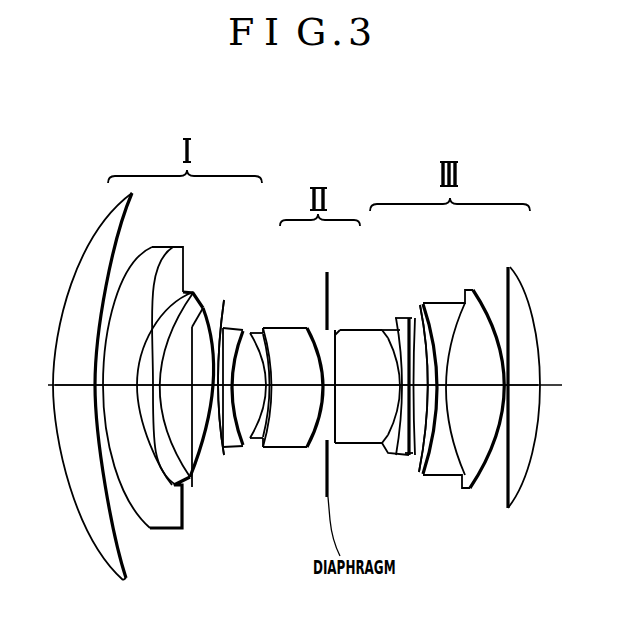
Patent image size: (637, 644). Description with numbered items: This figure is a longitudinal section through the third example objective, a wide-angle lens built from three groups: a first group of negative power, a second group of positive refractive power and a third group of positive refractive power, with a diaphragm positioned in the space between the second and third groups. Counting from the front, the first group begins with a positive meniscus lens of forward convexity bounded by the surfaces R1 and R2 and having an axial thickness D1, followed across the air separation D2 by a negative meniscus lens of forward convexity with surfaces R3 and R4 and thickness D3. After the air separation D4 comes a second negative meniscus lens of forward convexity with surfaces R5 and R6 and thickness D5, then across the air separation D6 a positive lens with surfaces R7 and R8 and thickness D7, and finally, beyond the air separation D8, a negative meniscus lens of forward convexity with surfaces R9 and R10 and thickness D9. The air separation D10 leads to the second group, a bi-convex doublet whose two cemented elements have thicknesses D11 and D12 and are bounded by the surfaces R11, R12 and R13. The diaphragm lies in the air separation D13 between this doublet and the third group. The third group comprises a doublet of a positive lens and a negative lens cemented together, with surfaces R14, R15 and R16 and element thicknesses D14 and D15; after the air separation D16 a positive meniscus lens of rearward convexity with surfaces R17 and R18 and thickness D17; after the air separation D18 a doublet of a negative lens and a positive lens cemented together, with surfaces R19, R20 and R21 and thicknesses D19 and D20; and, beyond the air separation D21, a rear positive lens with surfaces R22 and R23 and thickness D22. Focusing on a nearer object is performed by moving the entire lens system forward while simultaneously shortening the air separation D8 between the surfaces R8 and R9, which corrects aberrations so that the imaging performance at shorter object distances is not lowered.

The first lens surface R1 is at (102, 224).
The second lens surface R2 is at (127, 213).
The third lens surface R3 is at (141, 255).
The fourth lens surface R4 is at (173, 250).
The fifth lens surface R5 is at (189, 292).
The sixth lens surface R6 is at (194, 312).
The seventh lens surface R7 is at (204, 305).
The eighth lens surface R8 is at (211, 320).
The ninth lens surface R9 is at (225, 327).
The tenth lens surface R10 is at (251, 333).
The eleventh lens surface R11 is at (263, 332).
The twelfth lens surface R12 is at (293, 328).
The thirteenth lens surface R13 is at (317, 328).
The fourteenth lens surface R14 is at (343, 328).
The fifteenth lens surface R15 is at (382, 332).
The sixteenth lens surface R16 is at (400, 318).
The seventeenth lens surface R17 is at (408, 316).
The eighteenth lens surface R18 is at (420, 305).
The nineteenth lens surface R19 is at (425, 304).
The twentieth lens surface R20 is at (466, 302).
The twenty-first lens surface R21 is at (475, 290).
The twenty-second lens surface R22 is at (510, 302).
The twenty-third lens surface R23 is at (531, 314).
The first axial thickness D1 is at (64, 388).
The second axial air separation D2 is at (116, 492).
The third axial thickness D3 is at (158, 528).
The fourth axial air separation D4 is at (116, 388).
The fifth axial thickness D5 is at (192, 487).
The sixth axial air separation D6 is at (184, 388).
The seventh axial thickness D7 is at (204, 440).
The eighth axial air separation D8 is at (219, 440).
The ninth axial thickness D9 is at (238, 443).
The tenth axial air separation D10 is at (256, 443).
The eleventh axial thickness D11 is at (258, 444).
The twelfth axial thickness D12 is at (276, 388).
The thirteenth axial air separation D13 is at (326, 396).
The fourteenth axial thickness D14 is at (362, 388).
The fifteenth axial thickness D15 is at (387, 447).
The sixteenth axial air separation D16 is at (401, 455).
The seventeenth axial thickness D17 is at (411, 458).
The eighteenth axial air separation D18 is at (431, 452).
The nineteenth axial thickness D19 is at (446, 468).
The twentieth axial thickness D20 is at (472, 388).
The twenty-first axial air separation D21 is at (507, 445).
The twenty-second axial thickness D22 is at (518, 388).